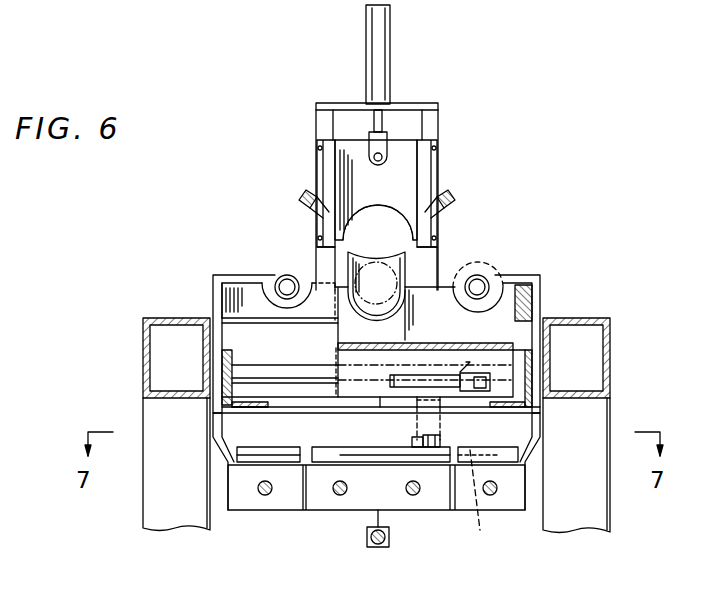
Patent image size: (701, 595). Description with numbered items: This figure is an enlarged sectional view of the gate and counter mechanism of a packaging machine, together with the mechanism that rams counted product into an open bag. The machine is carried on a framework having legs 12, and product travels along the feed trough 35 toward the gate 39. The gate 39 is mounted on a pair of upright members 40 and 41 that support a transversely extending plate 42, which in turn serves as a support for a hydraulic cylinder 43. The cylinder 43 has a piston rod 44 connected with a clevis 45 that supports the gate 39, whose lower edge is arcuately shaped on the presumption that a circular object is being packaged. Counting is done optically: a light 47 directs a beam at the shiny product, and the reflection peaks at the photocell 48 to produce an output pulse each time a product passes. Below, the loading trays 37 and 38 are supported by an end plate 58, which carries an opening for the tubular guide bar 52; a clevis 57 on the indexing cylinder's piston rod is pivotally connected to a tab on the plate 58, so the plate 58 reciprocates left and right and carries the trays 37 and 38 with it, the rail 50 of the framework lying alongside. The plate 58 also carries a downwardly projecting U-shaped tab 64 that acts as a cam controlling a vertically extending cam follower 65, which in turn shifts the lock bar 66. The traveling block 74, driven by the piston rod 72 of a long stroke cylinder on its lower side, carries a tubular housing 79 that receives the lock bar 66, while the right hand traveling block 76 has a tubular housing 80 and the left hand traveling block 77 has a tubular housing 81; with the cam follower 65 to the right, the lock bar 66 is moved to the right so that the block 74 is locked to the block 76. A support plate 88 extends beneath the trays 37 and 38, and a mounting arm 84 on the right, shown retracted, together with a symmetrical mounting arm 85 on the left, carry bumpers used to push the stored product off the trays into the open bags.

The legs 12 is at (150, 508).
The feed trough 35 is at (405, 265).
The loading tray 37 is at (376, 312).
The loading tray 38 is at (470, 312).
The gate 39 is at (400, 187).
The upright member 40 is at (316, 124).
The upright member 41 is at (440, 118).
The transversely extending plate 42 is at (410, 103).
The hydraulic cylinder 43 is at (366, 24).
The piston rod 44 is at (376, 118).
The clevis 45 is at (388, 140).
The light 47 is at (455, 200).
The photocell 48 is at (300, 214).
The rail 50 is at (545, 422).
The support bar 52 is at (244, 365).
The clevis 57 is at (470, 362).
The end plate 58 is at (515, 302).
The tab 64 is at (440, 444).
The cam follower 65 is at (423, 442).
The lock bar 66 is at (487, 508).
The piston rod 72 is at (378, 548).
The traveling block 74 is at (430, 510).
The right hand traveling block 76 is at (505, 508).
The left hand traveling block 77 is at (275, 505).
The tubular housing 79 is at (325, 462).
The tubular housing 80 is at (516, 456).
The tubular housing 81 is at (240, 406).
The mounting arm 84 is at (536, 277).
The mounting arm 85 is at (213, 278).
The support plate 88 is at (352, 337).